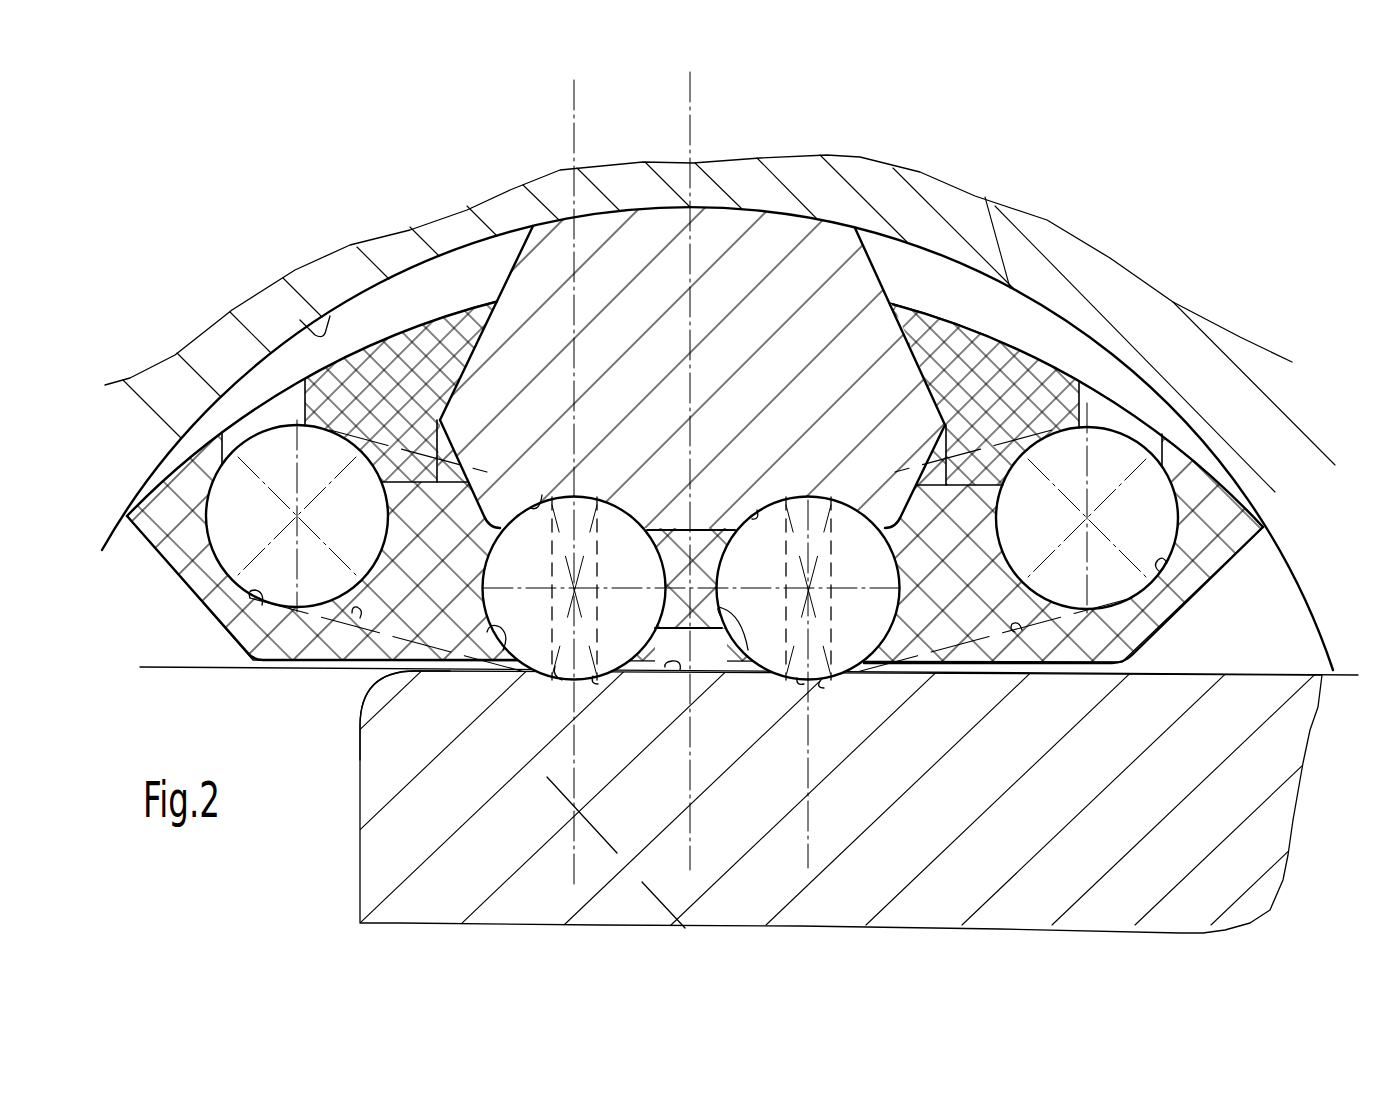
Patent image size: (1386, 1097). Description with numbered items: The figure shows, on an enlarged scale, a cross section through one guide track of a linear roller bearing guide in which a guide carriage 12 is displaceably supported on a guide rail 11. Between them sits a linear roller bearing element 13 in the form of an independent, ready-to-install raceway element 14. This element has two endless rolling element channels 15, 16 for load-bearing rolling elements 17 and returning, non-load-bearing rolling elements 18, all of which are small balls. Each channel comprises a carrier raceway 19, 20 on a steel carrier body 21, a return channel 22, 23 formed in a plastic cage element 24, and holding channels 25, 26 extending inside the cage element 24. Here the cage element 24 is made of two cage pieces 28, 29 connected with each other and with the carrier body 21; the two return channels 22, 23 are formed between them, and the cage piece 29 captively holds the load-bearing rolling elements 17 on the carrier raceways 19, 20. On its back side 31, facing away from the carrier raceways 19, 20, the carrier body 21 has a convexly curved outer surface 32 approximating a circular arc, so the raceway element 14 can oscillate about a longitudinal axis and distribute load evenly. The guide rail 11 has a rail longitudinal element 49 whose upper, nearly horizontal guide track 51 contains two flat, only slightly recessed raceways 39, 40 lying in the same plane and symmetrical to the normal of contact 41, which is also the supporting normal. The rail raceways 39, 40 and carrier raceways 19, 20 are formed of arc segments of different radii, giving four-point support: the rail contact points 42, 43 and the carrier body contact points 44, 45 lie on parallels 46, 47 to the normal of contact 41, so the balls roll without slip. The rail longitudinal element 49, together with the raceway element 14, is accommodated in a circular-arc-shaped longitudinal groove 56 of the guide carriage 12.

The guide rail 11 is at (1273, 866).
The guide carriage 12 is at (903, 205).
The linear roller bearing element 13 is at (1020, 327).
The raceway element 14 is at (950, 254).
The rolling element channel 15 is at (360, 618).
The rolling element channel 16 is at (1022, 630).
The load-bearing rolling elements 17 is at (614, 644).
The non-load-bearing rolling elements 18 is at (308, 586).
The carrier raceway 19 is at (542, 495).
The carrier raceway 20 is at (757, 510).
The carrier body 21 is at (648, 270).
The return channel 22 is at (262, 605).
The return channel 23 is at (1160, 572).
The cage element 24 is at (1045, 365).
The holding channel 25 is at (503, 650).
The holding channel 26 is at (748, 650).
The cage piece 28 is at (396, 388).
The cage piece 29 is at (413, 569).
The back side 31 is at (802, 214).
The outer surface 32 is at (722, 204).
The raceway 39 is at (563, 678).
The raceway 40 is at (801, 680).
The normal of contact 41 is at (693, 120).
The point of contact 42 is at (555, 666).
The point of contact 43 is at (593, 676).
The point of contact 44 is at (553, 498).
The point of contact 45 is at (599, 500).
The parallel 46 is at (552, 553).
The parallel 47 is at (598, 566).
The rail longitudinal element 49 is at (388, 762).
The guide track 51 is at (680, 670).
The longitudinal groove 56 is at (300, 320).